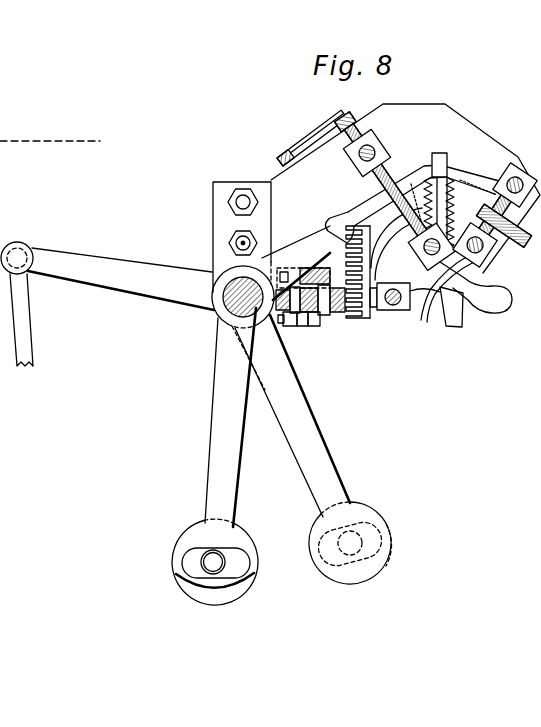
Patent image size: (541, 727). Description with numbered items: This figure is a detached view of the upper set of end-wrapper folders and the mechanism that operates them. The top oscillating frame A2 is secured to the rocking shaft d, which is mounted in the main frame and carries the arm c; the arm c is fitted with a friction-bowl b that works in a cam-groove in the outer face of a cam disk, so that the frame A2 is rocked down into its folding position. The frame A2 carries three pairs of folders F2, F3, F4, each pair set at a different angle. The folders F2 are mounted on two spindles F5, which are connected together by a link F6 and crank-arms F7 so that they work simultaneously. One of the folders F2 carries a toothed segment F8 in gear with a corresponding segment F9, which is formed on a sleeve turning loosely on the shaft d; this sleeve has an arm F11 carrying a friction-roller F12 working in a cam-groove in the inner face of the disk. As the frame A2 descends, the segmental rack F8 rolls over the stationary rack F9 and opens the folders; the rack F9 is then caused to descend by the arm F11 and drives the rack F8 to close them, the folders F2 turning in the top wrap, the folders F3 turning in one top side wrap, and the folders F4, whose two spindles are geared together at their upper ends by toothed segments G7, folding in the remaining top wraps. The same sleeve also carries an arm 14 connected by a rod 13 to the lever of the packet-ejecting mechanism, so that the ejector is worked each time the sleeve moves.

The rod 13 is at (33, 320).
The arm 14 is at (107, 276).
The rocking shaft d is at (226, 288).
The arm c is at (235, 417).
The friction-bowl b is at (208, 600).
The arm F11 is at (292, 416).
The friction-roller F12 is at (360, 578).
The oscillating frame A2 is at (401, 188).
The toothed segments G7 is at (312, 138).
The toothed segment F9 is at (340, 234).
The spindles F5 is at (347, 312).
The link F6 is at (297, 313).
The crank-arms F7 is at (322, 312).
The toothed segment F8 is at (380, 310).
The folders F2 is at (451, 307).
The folders F3 is at (424, 322).
The folders F4 is at (476, 287).